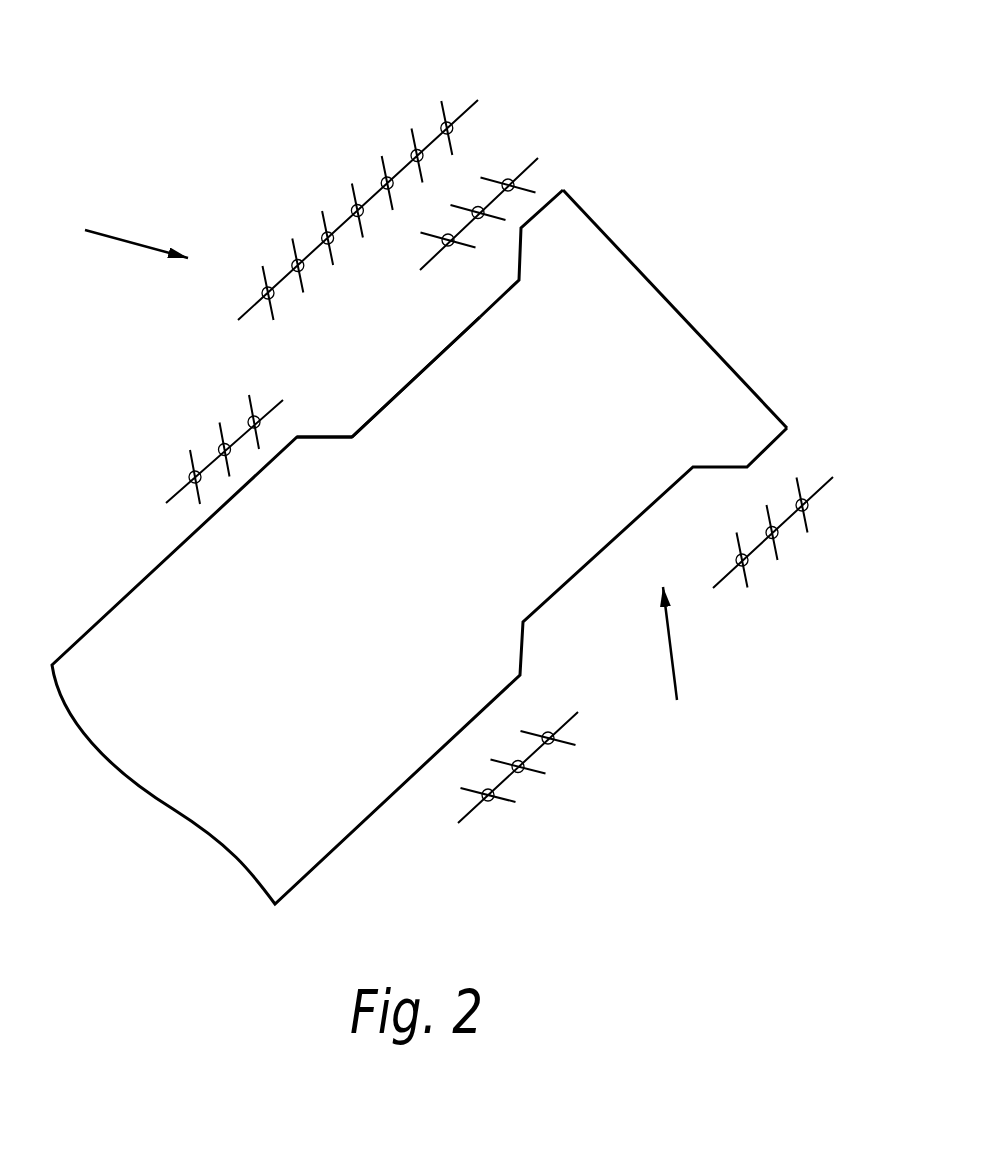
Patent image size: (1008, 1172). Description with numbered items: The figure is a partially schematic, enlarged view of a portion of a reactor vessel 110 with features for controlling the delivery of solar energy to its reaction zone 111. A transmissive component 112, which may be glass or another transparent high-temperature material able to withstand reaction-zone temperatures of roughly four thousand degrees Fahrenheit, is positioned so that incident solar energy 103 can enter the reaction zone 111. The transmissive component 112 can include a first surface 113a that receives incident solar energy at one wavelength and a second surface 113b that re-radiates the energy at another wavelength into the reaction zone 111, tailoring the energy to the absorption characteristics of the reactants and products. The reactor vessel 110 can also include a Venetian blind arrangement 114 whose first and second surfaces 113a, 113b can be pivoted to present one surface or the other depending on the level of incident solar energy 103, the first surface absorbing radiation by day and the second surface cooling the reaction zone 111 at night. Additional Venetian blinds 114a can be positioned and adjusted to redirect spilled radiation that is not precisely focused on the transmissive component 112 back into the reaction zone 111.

The incident solar energy 103 is at (118, 240).
The reactor vessel 110 is at (335, 851).
The reaction zone 111 is at (605, 480).
The transmissive component 112 is at (498, 292).
The first surface 113a is at (262, 280).
The second surface 113b is at (274, 296).
The Venetian blind arrangement 114 is at (458, 90).
The additional Venetian blinds 114a is at (537, 133).